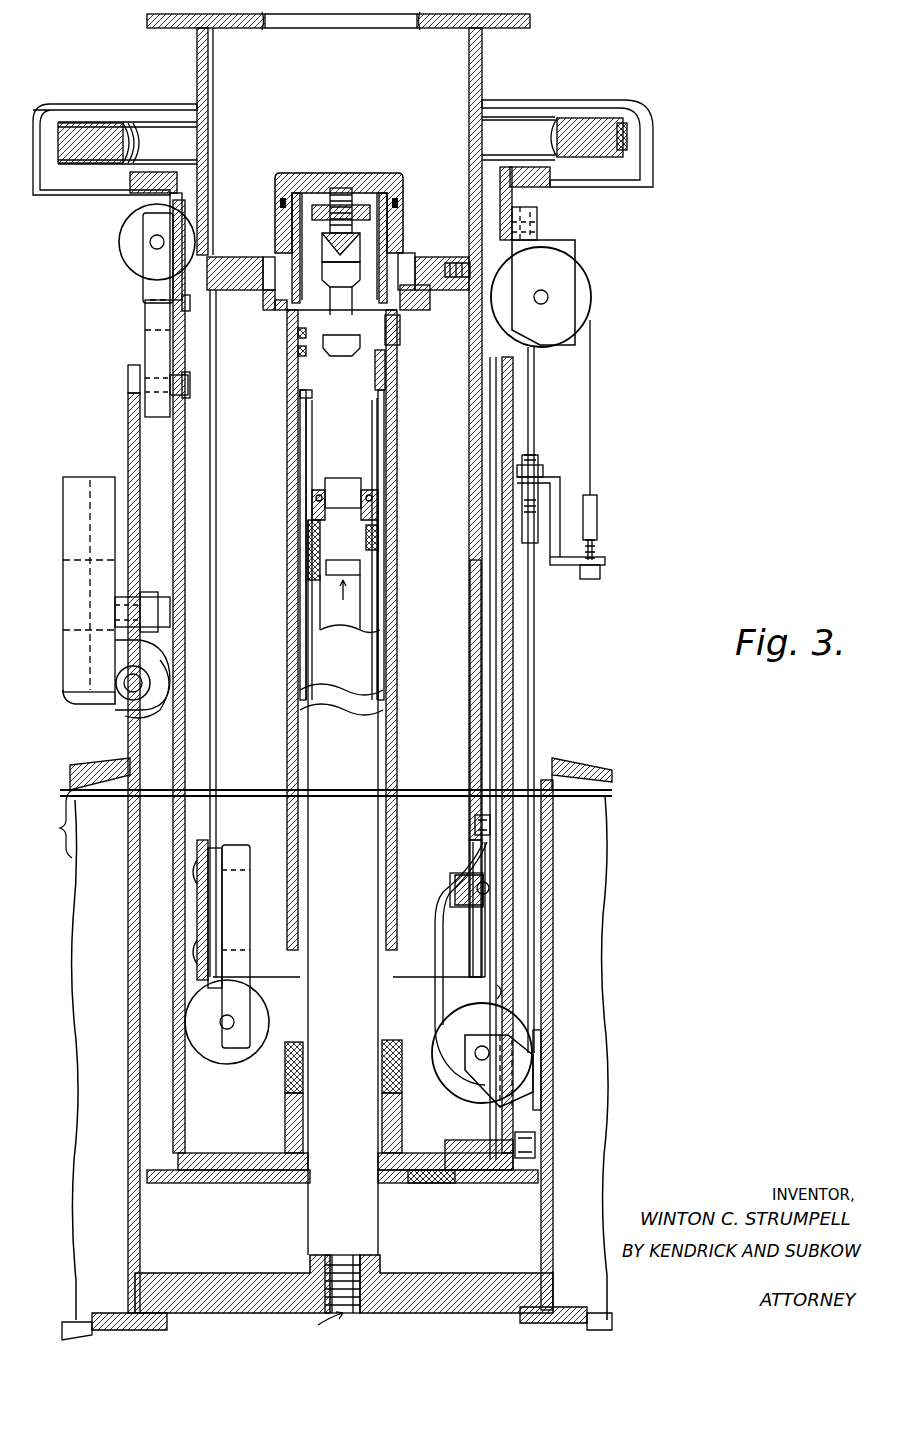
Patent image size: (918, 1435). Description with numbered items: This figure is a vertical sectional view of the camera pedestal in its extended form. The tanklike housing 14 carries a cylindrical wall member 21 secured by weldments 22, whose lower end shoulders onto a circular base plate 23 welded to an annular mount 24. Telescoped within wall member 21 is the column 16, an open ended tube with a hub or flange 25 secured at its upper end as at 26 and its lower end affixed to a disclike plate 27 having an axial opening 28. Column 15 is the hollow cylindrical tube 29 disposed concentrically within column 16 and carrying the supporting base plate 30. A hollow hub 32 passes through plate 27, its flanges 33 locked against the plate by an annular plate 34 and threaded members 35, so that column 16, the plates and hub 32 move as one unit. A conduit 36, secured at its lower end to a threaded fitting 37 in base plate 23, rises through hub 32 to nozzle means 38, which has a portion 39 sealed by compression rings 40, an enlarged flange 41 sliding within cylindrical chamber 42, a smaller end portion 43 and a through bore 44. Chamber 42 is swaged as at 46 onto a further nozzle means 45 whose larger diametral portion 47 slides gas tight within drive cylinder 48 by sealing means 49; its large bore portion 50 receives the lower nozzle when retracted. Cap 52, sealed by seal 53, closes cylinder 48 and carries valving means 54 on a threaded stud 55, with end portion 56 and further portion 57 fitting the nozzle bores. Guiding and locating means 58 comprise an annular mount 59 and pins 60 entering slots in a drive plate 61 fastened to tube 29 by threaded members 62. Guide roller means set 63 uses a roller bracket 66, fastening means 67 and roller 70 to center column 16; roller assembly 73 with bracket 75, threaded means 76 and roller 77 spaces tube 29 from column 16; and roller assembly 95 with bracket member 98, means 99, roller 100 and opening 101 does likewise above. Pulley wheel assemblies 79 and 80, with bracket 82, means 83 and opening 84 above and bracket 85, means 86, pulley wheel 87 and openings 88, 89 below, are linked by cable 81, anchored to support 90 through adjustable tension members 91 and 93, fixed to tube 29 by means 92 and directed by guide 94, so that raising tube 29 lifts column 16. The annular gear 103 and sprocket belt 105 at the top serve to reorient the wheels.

The housing 14 is at (606, 766).
The support column 15 is at (494, 70).
The support column 16 is at (523, 693).
The cylindrical wall member 21 is at (563, 878).
The weldments 22 is at (563, 760).
The circular base plate 23 is at (190, 1285).
The annular mount 24 is at (105, 1318).
The hub or flange 25 is at (652, 108).
The securing point 26 is at (548, 186).
The disclike plate 27 is at (469, 1150).
The axial opening 28 is at (406, 1140).
The hollow cylindrical tube 29 is at (468, 656).
The supporting base plate 30 is at (532, 22).
The hub 32 is at (285, 1112).
The flanges 33 is at (275, 1183).
The annular plate 34 is at (505, 1183).
The threaded members 35 is at (440, 1183).
The conduit 36 is at (382, 605).
The threaded fitting 37 is at (322, 1272).
The nozzle means 38 is at (379, 510).
The portion 39 is at (380, 536).
The compression rings 40 is at (307, 568).
The enlarged flange 41 is at (305, 525).
The cylindrical chamber 42 is at (300, 435).
The end portion 43 is at (359, 479).
The bore 44 is at (380, 574).
The further nozzle means 45 is at (289, 353).
The chamber wall ends 46 is at (382, 360).
The larger diametral portion 47 is at (400, 326).
The drive cylinder 48 is at (398, 435).
The sealing means 49 is at (297, 333).
The large bore portion 50 is at (308, 398).
The cap 52 is at (390, 174).
The seal 53 is at (290, 200).
The valving means 54 is at (375, 275).
The threaded stud 55 is at (341, 188).
The end portion 56 is at (370, 344).
The shank portion 57 is at (358, 256).
The guiding and locating means 58 is at (431, 309).
The annular mount 59 is at (262, 300).
The positioning pins 60 is at (268, 258).
The annular drive plate 61 is at (224, 257).
The threaded members 62 is at (456, 263).
The guide roller means set 63 is at (69, 713).
The roller bracket 66 is at (82, 480).
The threaded fastening means 67 is at (172, 612).
The roller 70 is at (154, 712).
The roller assembly 73 is at (244, 842).
The bracket 75 is at (250, 853).
The threaded means 76 is at (196, 955).
The roller 77 is at (220, 1064).
The pulley wheel assembly 79 is at (583, 273).
The pulley wheel assembly 80 is at (548, 1078).
The cable 81 is at (590, 454).
The bracket 82 is at (577, 293).
The securing means 83 is at (537, 224).
The opening 84 is at (543, 292).
The bracket 85 is at (530, 1098).
The securing means 86 is at (535, 1145).
The pulley wheel 87 is at (520, 1036).
The opening 88 is at (504, 995).
The opening 89 is at (485, 910).
The support 90 is at (565, 566).
The adjustable tension member 91 is at (598, 522).
The affixing means 92 is at (475, 822).
The adjustable tension member 93 is at (527, 511).
The guide 94 is at (475, 882).
The roller assembly 95 is at (115, 275).
The vertical bracket member 98 is at (145, 338).
The mounting means 99 is at (190, 388).
The roller 100 is at (120, 236).
The opening 101 is at (172, 198).
The annular gear 103 is at (578, 118).
The sprocket belt 105 is at (630, 137).